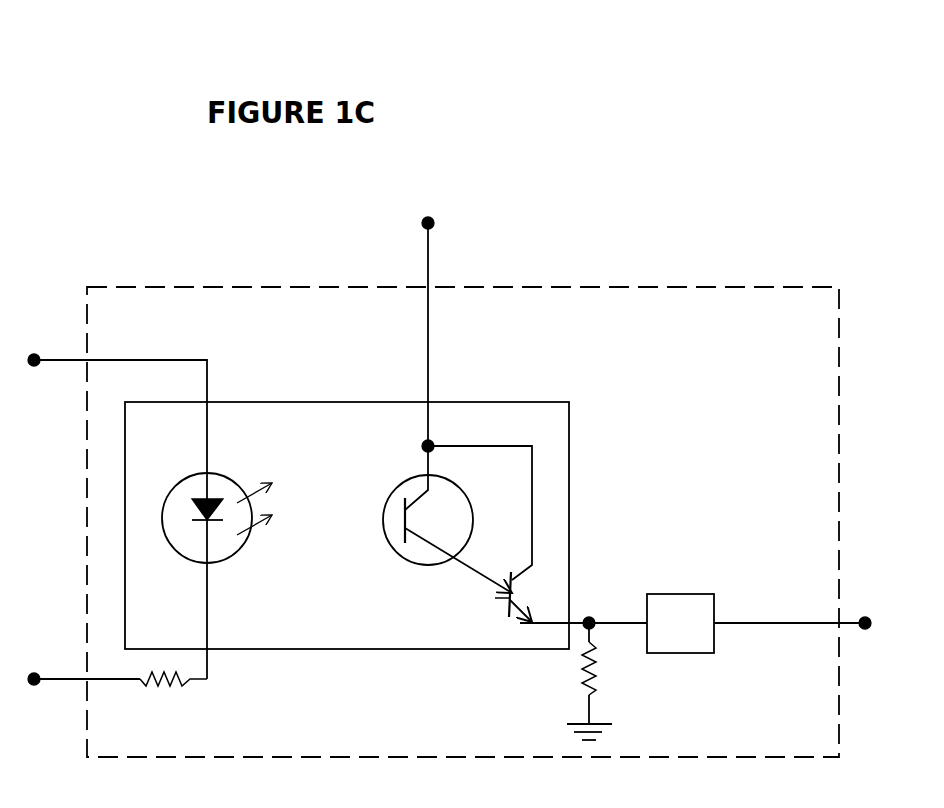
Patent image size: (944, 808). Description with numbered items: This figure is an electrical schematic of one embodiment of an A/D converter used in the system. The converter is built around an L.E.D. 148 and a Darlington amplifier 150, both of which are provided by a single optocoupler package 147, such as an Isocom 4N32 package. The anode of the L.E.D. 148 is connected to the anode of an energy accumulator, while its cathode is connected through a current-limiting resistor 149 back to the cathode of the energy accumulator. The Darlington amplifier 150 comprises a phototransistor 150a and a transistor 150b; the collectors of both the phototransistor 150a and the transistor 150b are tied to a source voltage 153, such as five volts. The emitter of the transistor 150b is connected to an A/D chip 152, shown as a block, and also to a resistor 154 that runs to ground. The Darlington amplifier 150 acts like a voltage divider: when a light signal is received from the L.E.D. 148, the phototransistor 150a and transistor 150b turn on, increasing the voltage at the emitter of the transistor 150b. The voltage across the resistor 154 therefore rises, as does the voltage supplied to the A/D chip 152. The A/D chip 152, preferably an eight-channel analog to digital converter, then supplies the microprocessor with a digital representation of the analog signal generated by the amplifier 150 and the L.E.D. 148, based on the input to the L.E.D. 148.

The package 147 is at (528, 402).
The L.E.D. 148 is at (222, 474).
The current-limiting resistor 149 is at (192, 687).
The Darlington amplifier 150 is at (434, 566).
The phototransistor 150a is at (392, 490).
The transistor 150b is at (507, 572).
The A/D chip 152 is at (694, 626).
The source voltage 153 is at (442, 218).
The resistor 154 is at (604, 680).